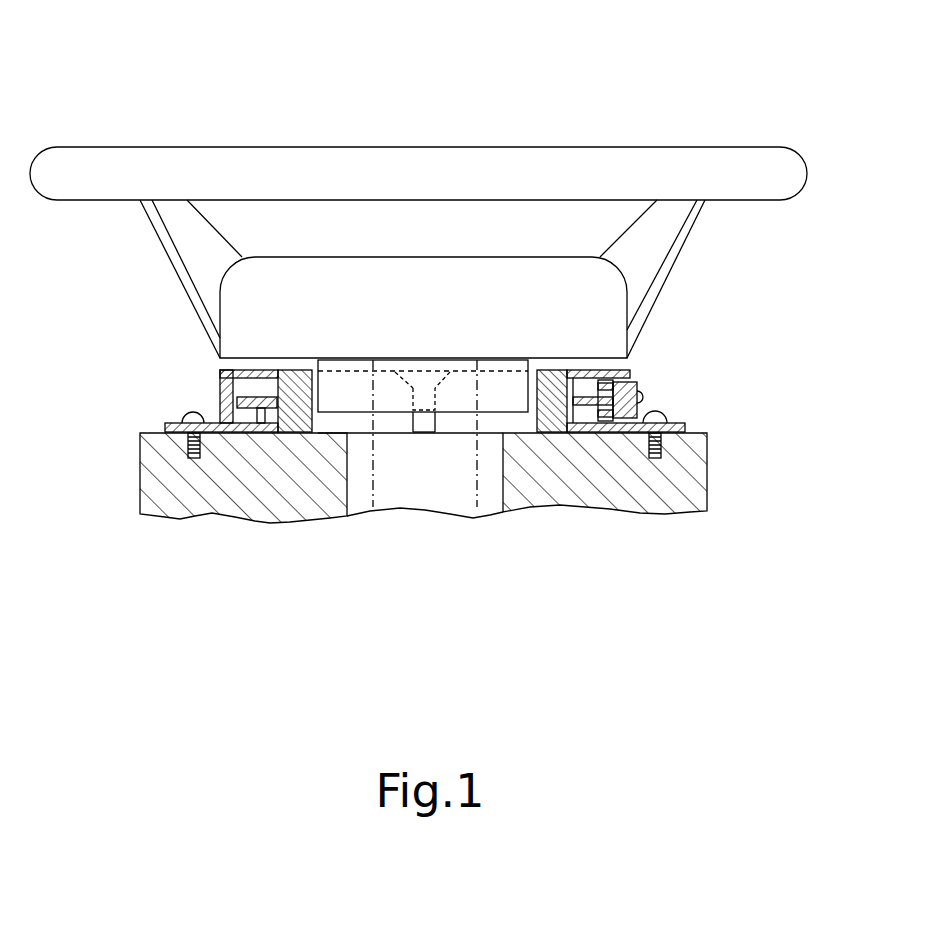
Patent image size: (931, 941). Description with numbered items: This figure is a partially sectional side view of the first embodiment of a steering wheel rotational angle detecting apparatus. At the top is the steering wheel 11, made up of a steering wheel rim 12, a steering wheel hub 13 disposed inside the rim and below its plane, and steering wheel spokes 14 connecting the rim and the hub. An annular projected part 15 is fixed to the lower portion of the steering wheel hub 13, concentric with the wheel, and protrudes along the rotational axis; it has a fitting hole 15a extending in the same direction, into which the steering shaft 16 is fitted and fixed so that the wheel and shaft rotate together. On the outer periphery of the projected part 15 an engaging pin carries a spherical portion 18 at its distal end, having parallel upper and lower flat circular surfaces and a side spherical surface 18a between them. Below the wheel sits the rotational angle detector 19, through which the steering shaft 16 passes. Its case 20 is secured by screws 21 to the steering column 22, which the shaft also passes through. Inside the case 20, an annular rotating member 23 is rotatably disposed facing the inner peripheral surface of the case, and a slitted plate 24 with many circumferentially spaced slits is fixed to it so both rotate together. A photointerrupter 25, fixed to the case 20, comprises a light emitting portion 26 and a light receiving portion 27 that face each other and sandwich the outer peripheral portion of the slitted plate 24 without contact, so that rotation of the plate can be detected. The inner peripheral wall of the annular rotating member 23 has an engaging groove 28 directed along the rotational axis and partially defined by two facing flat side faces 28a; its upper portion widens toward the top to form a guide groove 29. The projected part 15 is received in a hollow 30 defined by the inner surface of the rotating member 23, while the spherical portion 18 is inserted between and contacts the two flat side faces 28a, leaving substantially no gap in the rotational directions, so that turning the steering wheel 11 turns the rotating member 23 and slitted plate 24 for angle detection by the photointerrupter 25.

The steering wheel 11 is at (722, 128).
The steering wheel rim 12 is at (786, 201).
The steering wheel hub 13 is at (357, 257).
The steering wheel spokes 14 is at (220, 232).
The annular projected part 15 is at (303, 385).
The fitting hole 15a is at (476, 360).
The steering shaft 16 is at (497, 518).
The spherical portion 18 is at (415, 376).
The side spherical surface 18a is at (437, 378).
The rotational angle detector 19 is at (647, 351).
The case 20 is at (221, 358).
The screws 21 is at (184, 412).
The steering column 22 is at (148, 437).
The annular rotating member 23 is at (335, 434).
The slitted plate 24 is at (258, 433).
The photointerrupter 25 is at (640, 392).
The light emitting portion 26 is at (655, 458).
The light receiving portion 27 is at (603, 383).
The engaging groove 28 is at (427, 444).
The flat side faces 28a is at (412, 414).
The guide groove 29 is at (390, 378).
The hollow 30 is at (359, 429).